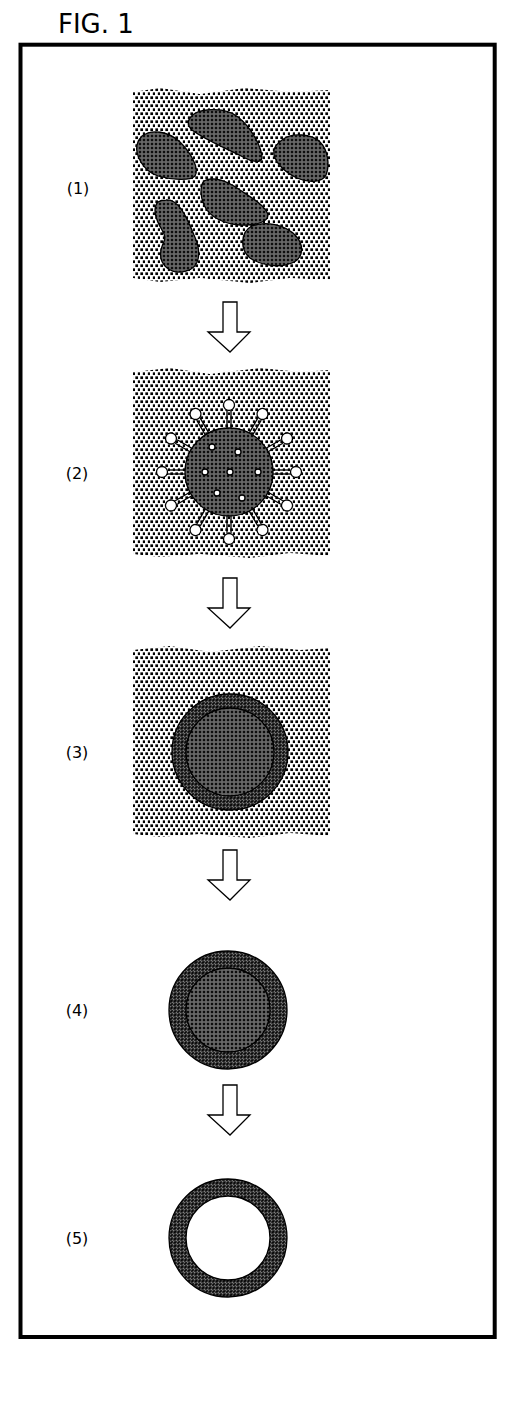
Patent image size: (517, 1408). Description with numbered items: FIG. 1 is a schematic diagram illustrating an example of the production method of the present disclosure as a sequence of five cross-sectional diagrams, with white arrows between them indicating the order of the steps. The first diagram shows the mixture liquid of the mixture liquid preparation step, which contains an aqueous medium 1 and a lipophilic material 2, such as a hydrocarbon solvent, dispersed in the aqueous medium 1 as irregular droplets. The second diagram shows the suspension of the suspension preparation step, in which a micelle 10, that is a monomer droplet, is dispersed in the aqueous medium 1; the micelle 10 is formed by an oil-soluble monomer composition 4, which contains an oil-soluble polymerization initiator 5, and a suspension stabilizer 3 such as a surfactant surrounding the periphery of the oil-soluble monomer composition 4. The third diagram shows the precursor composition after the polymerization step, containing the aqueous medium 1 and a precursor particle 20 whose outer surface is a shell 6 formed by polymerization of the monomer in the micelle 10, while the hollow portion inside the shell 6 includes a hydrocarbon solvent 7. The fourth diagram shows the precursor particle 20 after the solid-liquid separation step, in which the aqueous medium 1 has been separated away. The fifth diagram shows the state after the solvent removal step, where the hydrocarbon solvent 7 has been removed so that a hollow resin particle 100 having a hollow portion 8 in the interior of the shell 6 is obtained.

The aqueous medium 1 is at (146, 114).
The lipophilic material 2 is at (231, 109).
The suspension stabilizer 3 is at (205, 425).
The oil-soluble monomer composition 4 is at (240, 418).
The oil-soluble polymerization initiator 5 is at (202, 520).
The micelle 10 is at (233, 459).
The precursor particle 20 is at (238, 853).
The shell 6 is at (280, 713).
The hydrocarbon solvent 7 is at (272, 763).
The hollow resin particle 100 is at (238, 1213).
The hollow portion 8 is at (259, 1258).